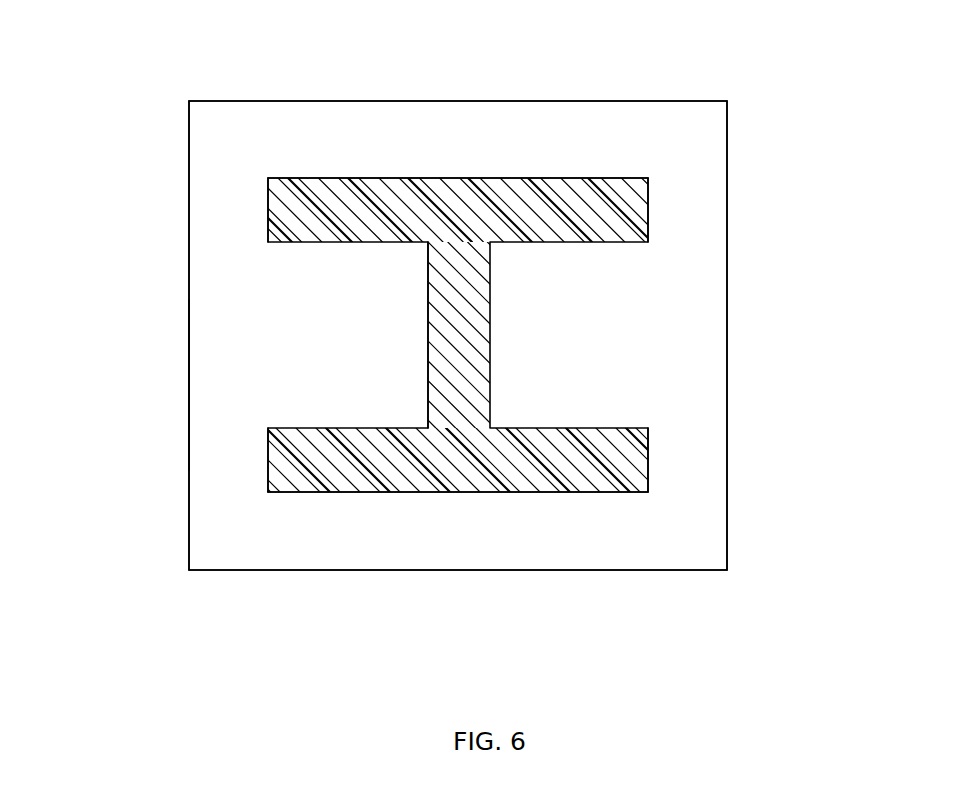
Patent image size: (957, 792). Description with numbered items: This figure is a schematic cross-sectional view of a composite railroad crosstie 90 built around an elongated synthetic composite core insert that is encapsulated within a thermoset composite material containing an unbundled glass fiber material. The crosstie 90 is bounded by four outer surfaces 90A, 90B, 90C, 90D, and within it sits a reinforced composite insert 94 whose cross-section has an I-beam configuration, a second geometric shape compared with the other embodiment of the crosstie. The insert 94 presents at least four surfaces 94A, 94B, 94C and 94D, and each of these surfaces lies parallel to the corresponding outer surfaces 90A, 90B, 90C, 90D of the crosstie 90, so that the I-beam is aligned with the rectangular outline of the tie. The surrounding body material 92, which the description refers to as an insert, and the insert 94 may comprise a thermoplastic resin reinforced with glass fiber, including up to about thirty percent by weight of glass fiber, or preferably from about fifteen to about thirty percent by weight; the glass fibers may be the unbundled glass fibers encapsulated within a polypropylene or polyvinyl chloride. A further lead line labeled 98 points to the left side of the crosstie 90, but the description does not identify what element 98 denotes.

The composite railroad crosstie 90 is at (655, 79).
The outer surface of the crosstie 90A is at (189, 275).
The outer surface of the crosstie 90B is at (536, 102).
The outer surface of the crosstie 90C is at (727, 370).
The outer surface of the crosstie 90D is at (570, 570).
The insert 92 is at (703, 270).
The reinforced composite insert 94 is at (665, 178).
The surface of the insert 94A is at (268, 215).
The surface of the insert 94B is at (352, 178).
The surface of the insert 94C is at (648, 223).
The surface of the insert 94D is at (460, 492).
The block surface 98 is at (189, 386).